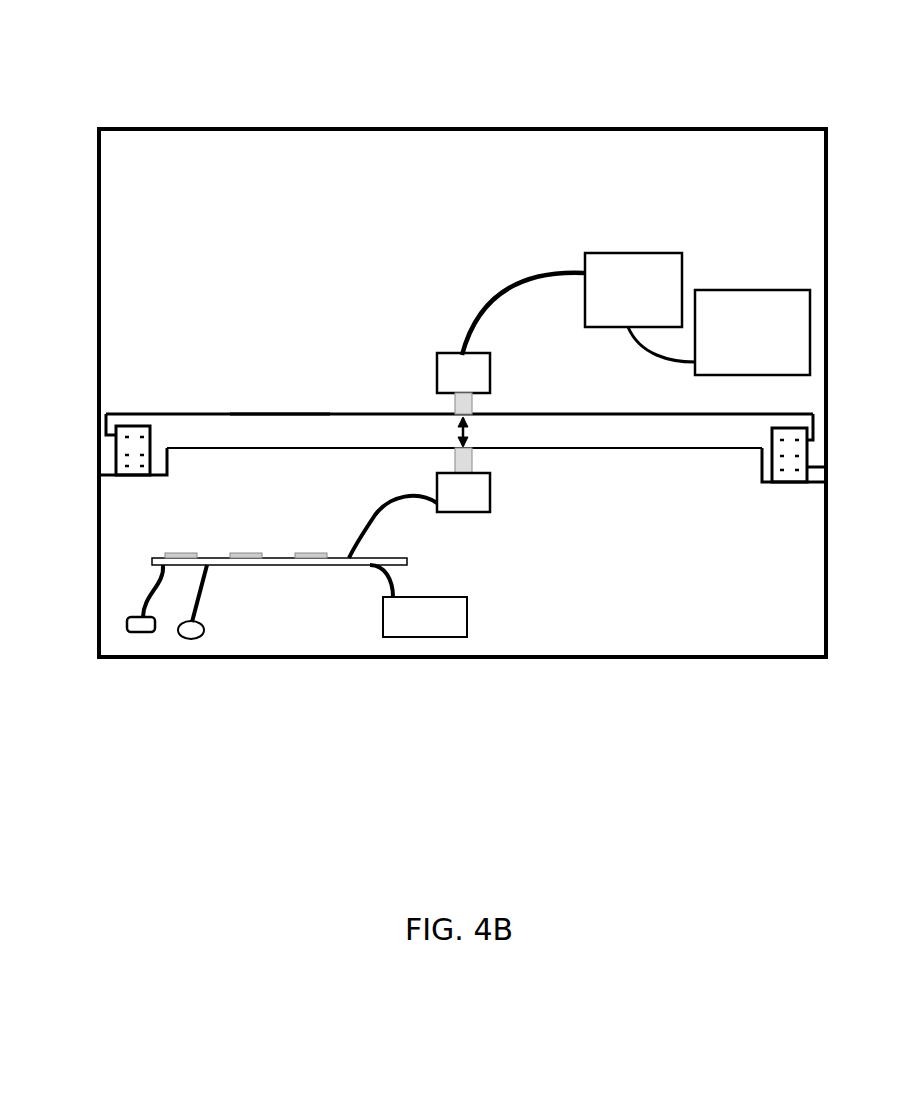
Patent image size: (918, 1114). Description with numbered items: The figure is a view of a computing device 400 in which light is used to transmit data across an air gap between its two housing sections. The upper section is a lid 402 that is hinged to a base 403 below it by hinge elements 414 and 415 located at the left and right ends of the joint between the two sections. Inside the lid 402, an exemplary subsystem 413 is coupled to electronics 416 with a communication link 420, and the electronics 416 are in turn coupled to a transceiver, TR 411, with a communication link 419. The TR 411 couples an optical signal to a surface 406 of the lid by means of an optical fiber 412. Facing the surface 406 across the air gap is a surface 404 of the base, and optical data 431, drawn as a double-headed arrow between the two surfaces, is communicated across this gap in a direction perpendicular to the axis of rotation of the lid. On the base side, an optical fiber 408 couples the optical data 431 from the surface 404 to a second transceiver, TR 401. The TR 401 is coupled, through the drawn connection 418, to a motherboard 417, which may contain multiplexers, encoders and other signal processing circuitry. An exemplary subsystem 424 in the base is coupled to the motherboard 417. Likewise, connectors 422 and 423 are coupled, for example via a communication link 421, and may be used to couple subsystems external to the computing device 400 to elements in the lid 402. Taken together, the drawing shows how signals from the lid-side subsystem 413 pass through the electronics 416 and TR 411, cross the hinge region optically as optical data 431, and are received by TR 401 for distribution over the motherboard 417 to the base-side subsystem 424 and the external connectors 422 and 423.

The computing device 400 is at (687, 85).
The TR 401 is at (455, 513).
The lid 402 is at (186, 181).
The base 403 is at (599, 636).
The surface 404 is at (413, 447).
The surface 406 is at (272, 412).
The optical fiber 408 is at (475, 457).
The TR 411 is at (443, 352).
The optical fiber 412 is at (474, 404).
The subsystem 413 is at (743, 290).
The hinge element 414 is at (117, 452).
The hinge element 415 is at (793, 450).
The electronics 416 is at (645, 253).
The motherboard 417 is at (233, 566).
The connection between transceiver and circuit board 418 is at (360, 500).
The communication link 419 is at (527, 280).
The communication link 420 is at (647, 345).
The communication link 421 is at (147, 588).
The connector 422 is at (130, 625).
The connector 423 is at (200, 630).
The subsystem 424 is at (418, 632).
The optical data 431 is at (470, 435).